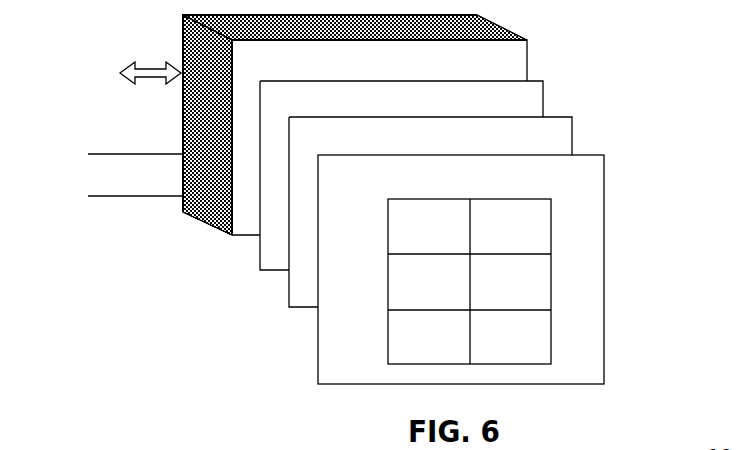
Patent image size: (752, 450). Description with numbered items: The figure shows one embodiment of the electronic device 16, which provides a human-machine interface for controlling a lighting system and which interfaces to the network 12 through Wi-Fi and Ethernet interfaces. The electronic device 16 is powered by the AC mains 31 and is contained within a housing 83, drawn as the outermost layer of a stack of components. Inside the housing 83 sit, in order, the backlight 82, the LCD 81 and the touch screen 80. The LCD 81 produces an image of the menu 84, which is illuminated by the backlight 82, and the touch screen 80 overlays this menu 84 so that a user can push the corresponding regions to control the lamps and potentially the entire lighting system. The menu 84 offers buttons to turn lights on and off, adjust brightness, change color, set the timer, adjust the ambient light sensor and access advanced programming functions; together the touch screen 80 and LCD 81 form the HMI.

The network 12 is at (87, 96).
The electronic device 16 is at (598, 74).
The AC mains 31 is at (78, 210).
The touch screen 80 is at (535, 186).
The LCD 81 is at (464, 148).
The backlight 82 is at (456, 111).
The housing 83 is at (428, 71).
The menu 84 is at (552, 282).